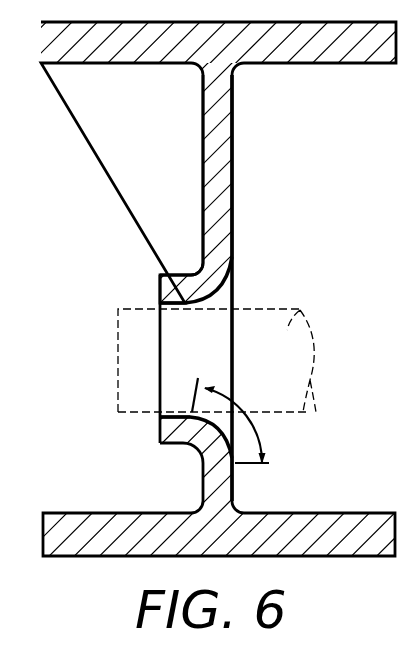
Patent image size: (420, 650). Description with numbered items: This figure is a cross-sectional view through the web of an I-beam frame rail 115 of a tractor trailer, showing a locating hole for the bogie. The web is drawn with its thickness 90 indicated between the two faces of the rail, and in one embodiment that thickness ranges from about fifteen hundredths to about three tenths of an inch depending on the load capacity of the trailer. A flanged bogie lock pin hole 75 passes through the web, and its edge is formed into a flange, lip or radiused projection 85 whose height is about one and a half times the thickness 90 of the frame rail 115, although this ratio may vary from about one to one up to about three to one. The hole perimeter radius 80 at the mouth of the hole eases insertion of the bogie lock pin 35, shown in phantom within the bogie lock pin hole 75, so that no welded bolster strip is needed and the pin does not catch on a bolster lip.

The I-beam frame rail 115 is at (217, 127).
The thickness 90 is at (157, 169).
The radiused projection 85 is at (180, 272).
The bogie lock pin hole 75 is at (163, 310).
The bogie lock pin 35 is at (300, 310).
The hole perimeter radius 80 is at (248, 418).